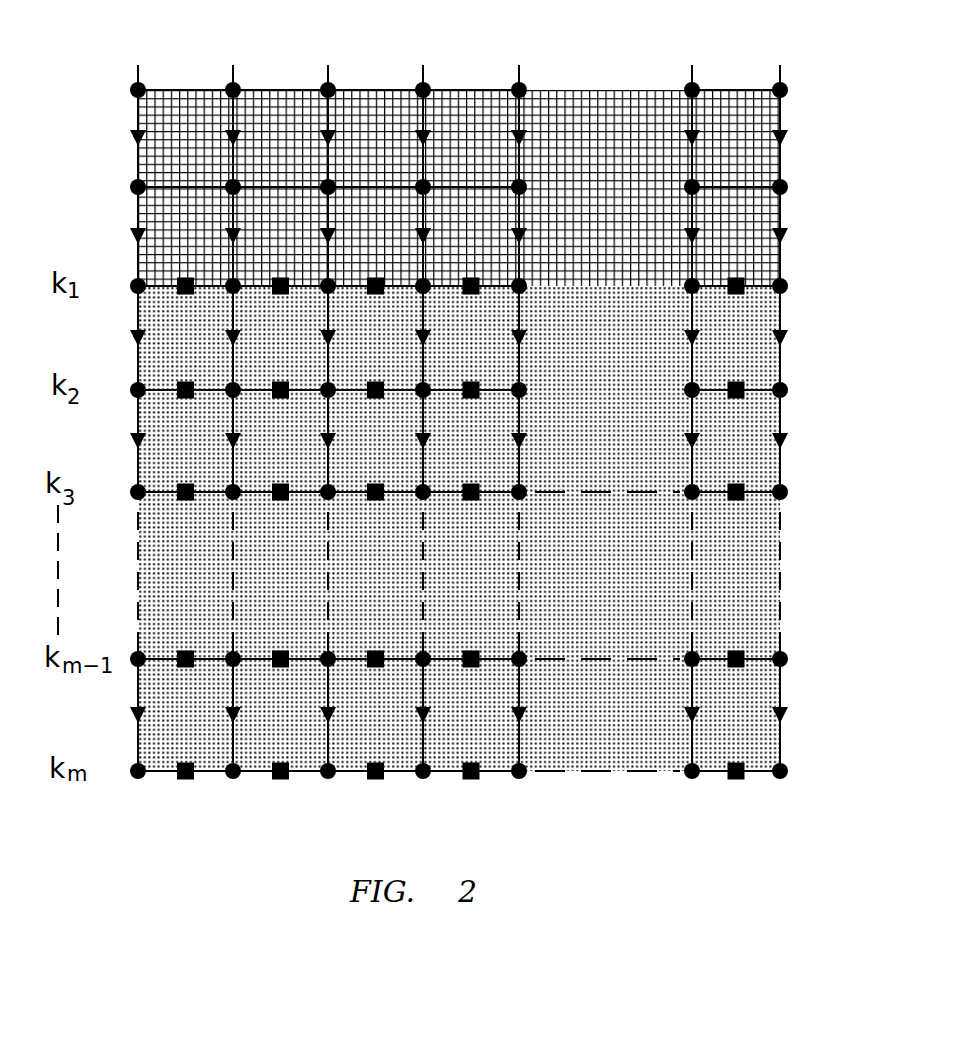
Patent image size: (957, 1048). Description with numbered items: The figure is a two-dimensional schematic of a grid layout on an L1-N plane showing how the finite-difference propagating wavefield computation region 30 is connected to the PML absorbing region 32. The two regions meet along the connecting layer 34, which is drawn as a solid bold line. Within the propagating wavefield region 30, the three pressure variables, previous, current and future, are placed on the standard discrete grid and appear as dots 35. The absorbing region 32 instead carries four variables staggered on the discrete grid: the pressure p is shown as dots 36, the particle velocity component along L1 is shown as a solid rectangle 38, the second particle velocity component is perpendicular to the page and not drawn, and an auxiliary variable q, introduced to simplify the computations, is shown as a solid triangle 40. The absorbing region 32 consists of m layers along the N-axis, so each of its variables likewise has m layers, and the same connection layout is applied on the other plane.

The finite-difference propagating wavefield computation region 30 is at (803, 186).
The PML absorbing region 32 is at (805, 562).
The connecting layer 34 is at (790, 286).
The dots 35 is at (779, 88).
The dots 36 is at (786, 392).
The solid rectangle 38 is at (746, 389).
The solid triangle 40 is at (795, 339).